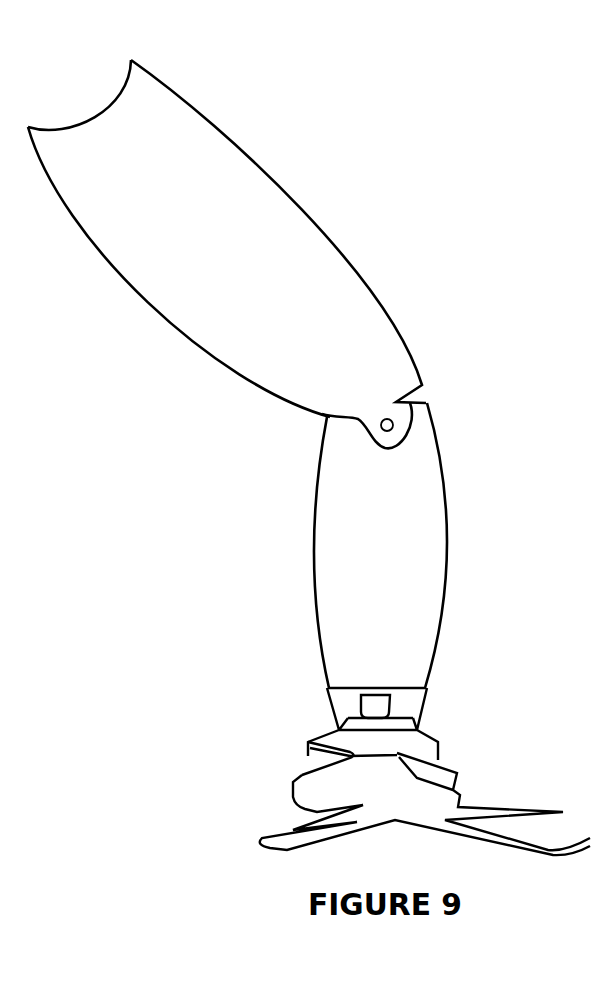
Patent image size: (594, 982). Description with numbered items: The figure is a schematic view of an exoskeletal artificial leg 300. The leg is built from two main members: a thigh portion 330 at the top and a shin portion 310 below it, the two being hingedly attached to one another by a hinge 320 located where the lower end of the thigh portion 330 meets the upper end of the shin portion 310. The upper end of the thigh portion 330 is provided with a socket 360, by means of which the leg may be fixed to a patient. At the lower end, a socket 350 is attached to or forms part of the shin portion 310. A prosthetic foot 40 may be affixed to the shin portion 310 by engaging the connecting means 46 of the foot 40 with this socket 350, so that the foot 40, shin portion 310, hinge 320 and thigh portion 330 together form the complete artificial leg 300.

The exoskeletal artificial leg 300 is at (497, 106).
The shin portion 310 is at (450, 553).
The hinge 320 is at (393, 424).
The thigh portion 330 is at (328, 232).
The socket 350 is at (345, 702).
The socket 360 is at (98, 124).
The prosthetic foot 40 is at (313, 787).
The connecting means 46 is at (382, 703).